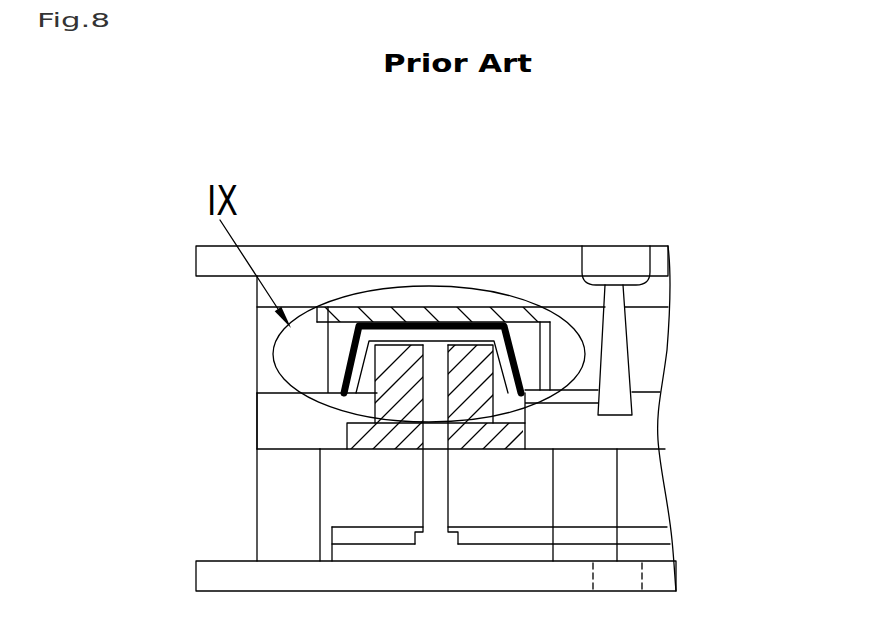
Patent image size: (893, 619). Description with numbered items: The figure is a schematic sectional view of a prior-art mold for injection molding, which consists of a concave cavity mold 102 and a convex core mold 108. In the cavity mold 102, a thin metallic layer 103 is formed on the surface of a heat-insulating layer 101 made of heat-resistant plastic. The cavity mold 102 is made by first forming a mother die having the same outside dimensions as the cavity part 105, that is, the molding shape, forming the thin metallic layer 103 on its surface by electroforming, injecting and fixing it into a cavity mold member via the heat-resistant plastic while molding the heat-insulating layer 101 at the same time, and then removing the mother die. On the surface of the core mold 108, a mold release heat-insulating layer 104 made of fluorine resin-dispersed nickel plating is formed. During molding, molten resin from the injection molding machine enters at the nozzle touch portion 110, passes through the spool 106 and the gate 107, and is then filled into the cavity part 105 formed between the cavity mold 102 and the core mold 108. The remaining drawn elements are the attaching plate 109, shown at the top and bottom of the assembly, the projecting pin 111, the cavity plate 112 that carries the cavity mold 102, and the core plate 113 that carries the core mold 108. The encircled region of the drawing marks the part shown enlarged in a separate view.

The heat-insulating layer 101 is at (418, 322).
The cavity mold 102 is at (480, 312).
The thin metallic layer 103 is at (346, 368).
The mold release heat-insulating layer 104 is at (376, 392).
The cavity part 105 is at (370, 347).
The spool 106 is at (615, 353).
The gate 107 is at (500, 402).
The core mold 108 is at (387, 433).
The attaching plate 109 is at (312, 262).
The nozzle touch portion 110 is at (613, 260).
The projecting pin 111 is at (437, 483).
The cavity plate 112 is at (258, 325).
The core plate 113 is at (272, 422).